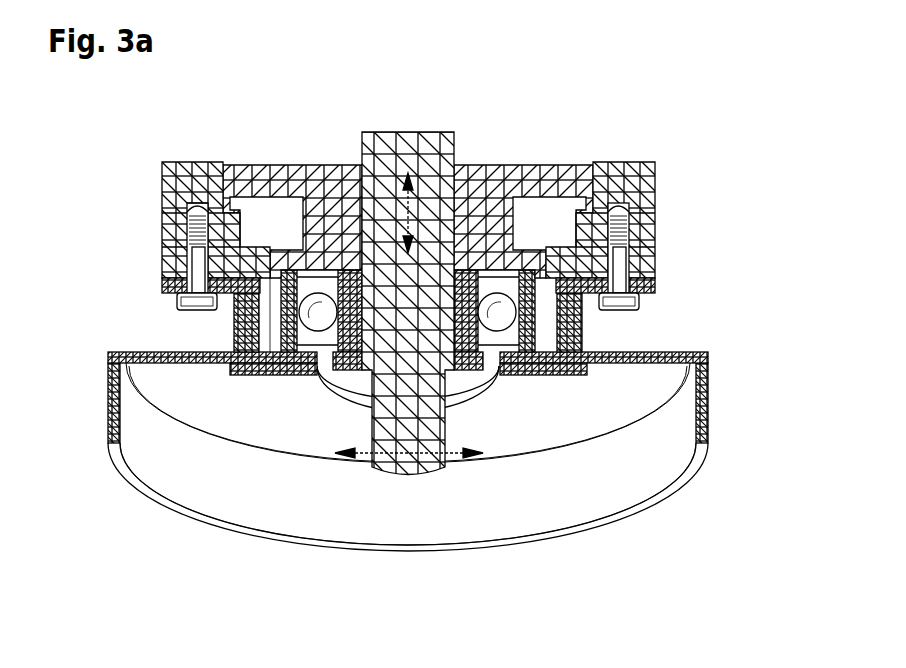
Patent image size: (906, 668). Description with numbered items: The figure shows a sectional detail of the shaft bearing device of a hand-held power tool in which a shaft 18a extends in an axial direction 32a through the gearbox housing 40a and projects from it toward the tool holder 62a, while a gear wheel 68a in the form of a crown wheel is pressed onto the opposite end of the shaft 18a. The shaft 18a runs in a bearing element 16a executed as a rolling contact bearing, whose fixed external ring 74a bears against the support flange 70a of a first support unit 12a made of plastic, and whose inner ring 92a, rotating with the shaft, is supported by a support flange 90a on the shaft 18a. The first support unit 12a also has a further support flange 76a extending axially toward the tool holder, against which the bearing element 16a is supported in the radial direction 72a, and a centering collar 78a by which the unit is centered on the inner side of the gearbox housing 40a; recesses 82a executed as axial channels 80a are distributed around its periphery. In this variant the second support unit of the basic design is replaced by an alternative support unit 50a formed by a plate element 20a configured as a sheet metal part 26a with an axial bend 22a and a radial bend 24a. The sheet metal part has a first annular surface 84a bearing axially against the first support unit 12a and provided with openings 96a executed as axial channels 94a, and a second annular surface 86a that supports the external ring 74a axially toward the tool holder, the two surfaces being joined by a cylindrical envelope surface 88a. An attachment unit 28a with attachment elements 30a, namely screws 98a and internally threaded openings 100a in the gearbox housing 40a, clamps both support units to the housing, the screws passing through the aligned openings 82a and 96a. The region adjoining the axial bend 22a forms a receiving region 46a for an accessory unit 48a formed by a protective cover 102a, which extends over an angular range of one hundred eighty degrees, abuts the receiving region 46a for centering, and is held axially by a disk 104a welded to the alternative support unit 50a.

The first support unit 12a is at (657, 225).
The bearing element 16a is at (287, 178).
The shaft 18a is at (427, 160).
The plate element 20a is at (657, 255).
The axial bend 22a is at (653, 308).
The radial bend 24a is at (600, 377).
The sheet metal part 26a is at (655, 293).
The attachment unit 28a is at (170, 212).
The attachment elements 30a is at (175, 158).
The axial direction 32a is at (382, 190).
The gearbox housing 40a is at (610, 180).
The receiving region 46a is at (686, 482).
The accessory unit 48a is at (707, 370).
The alternative support unit 50a is at (657, 285).
The tool holder 62a is at (377, 482).
The gear wheel 68a is at (550, 165).
The support flange 70a is at (268, 180).
The radial direction 72a is at (390, 478).
The external ring 74a is at (505, 333).
The further support flange 76a is at (242, 380).
The centering collar 78a is at (622, 222).
The axial channels 80a is at (163, 262).
The recesses 82a is at (163, 240).
The first annular surface 84a is at (175, 298).
The second annular surface 86a is at (268, 378).
The cylindrical envelope surface 88a is at (110, 357).
The support flange 90a is at (300, 378).
The inner ring 92a is at (543, 180).
The axial channels 94a is at (170, 284).
The openings 96a is at (233, 323).
The screws 98a is at (630, 232).
The openings 100a is at (192, 200).
The protective cover 102a is at (707, 413).
The disk 104a is at (122, 445).